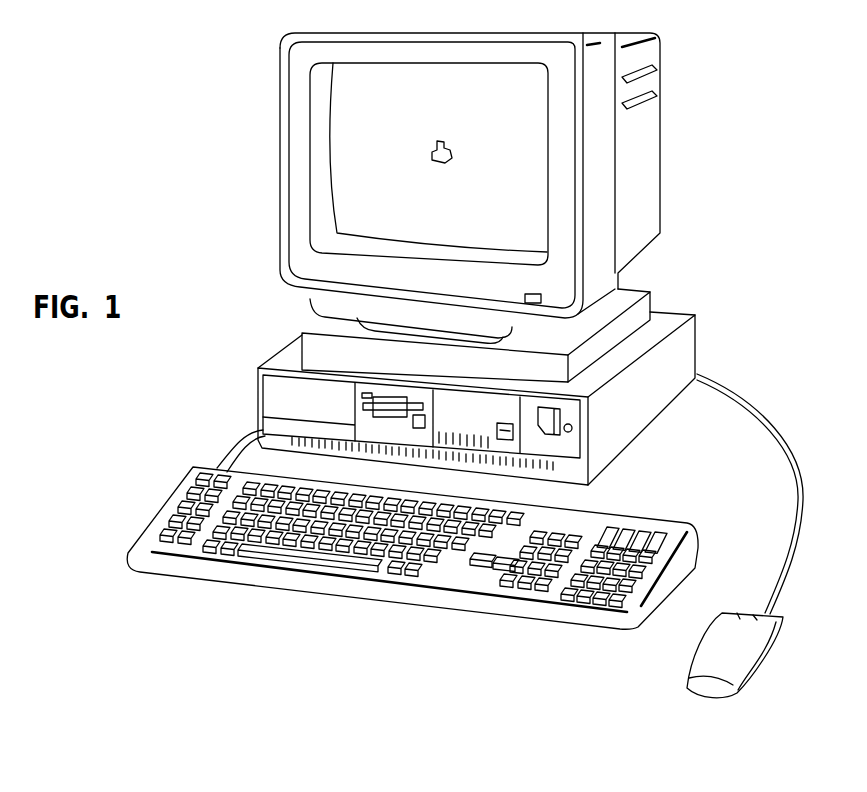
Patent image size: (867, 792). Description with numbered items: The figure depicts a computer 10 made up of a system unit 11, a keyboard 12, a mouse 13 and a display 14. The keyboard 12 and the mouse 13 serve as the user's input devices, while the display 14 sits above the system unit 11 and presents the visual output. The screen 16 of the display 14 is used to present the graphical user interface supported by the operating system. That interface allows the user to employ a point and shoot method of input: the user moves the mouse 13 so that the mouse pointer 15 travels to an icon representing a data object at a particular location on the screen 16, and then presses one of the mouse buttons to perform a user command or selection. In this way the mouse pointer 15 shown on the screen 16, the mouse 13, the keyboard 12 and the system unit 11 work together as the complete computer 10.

The computer 10 is at (229, 241).
The system unit 11 is at (257, 390).
The keyboard 12 is at (160, 573).
The mouse 13 is at (773, 647).
The display 14 is at (281, 156).
The mouse pointer 15 is at (437, 140).
The screen 16 is at (400, 191).